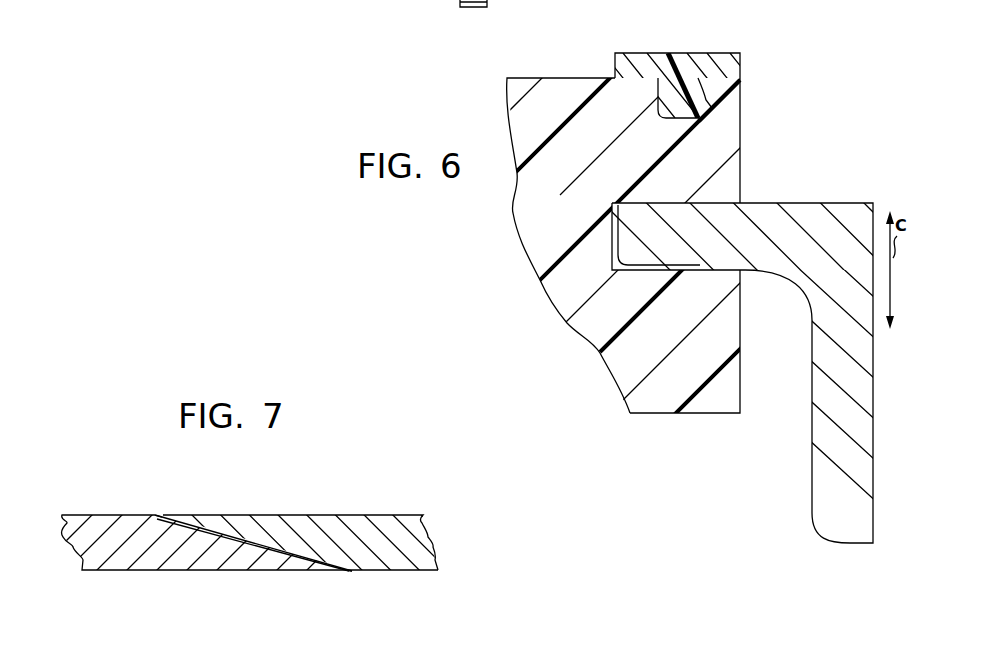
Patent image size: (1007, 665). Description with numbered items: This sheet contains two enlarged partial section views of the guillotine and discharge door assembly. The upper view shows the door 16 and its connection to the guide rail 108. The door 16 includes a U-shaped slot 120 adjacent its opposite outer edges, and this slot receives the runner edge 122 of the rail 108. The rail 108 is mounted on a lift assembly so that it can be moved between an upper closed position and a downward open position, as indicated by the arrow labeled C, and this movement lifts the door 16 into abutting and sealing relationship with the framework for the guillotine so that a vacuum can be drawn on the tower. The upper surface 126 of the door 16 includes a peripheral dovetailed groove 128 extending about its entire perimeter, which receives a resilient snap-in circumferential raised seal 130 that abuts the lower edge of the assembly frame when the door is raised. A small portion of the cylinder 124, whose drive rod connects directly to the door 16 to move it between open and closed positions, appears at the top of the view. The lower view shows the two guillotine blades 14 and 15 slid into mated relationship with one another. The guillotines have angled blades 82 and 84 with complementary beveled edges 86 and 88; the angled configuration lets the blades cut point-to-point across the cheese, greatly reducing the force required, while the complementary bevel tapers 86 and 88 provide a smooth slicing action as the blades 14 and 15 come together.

In FIG. 6, the cylinder 124 is at (474, 13).
In FIG. 6, the upper surface 126 is at (553, 82).
In FIG. 6, the raised seal 130 is at (680, 62).
In FIG. 6, the dovetailed groove 128 is at (733, 88).
In FIG. 6, the door 16 is at (733, 137).
In FIG. 6, the U-shaped slot 120 is at (607, 235).
In FIG. 6, the guide rail 108 is at (802, 210).
In FIG. 6, the runner edge 122 is at (762, 257).
In FIG. 7, the guillotine blade 14 is at (168, 563).
In FIG. 7, the guillotine blade 15 is at (367, 532).
In FIG. 7, the angled blade 84 is at (153, 513).
In FIG. 7, the beveled edge 88 is at (290, 547).
In FIG. 7, the beveled edge 86 is at (270, 550).
In FIG. 7, the angled blade 82 is at (350, 573).